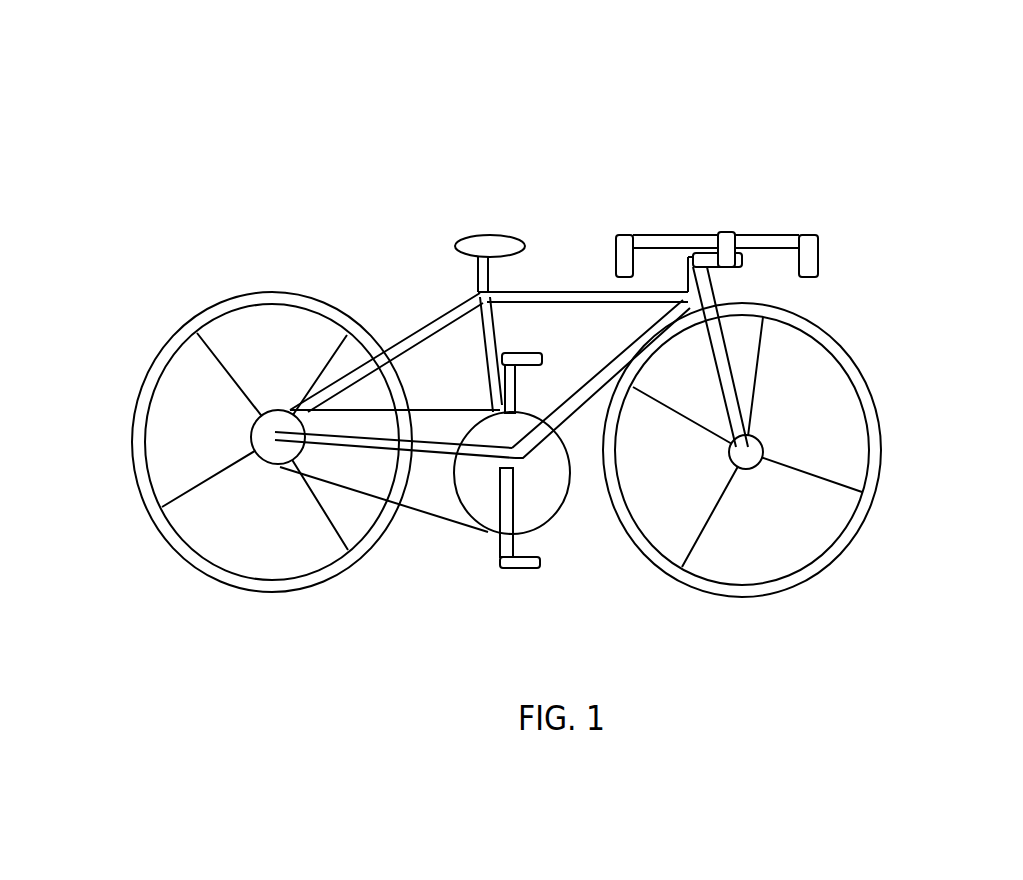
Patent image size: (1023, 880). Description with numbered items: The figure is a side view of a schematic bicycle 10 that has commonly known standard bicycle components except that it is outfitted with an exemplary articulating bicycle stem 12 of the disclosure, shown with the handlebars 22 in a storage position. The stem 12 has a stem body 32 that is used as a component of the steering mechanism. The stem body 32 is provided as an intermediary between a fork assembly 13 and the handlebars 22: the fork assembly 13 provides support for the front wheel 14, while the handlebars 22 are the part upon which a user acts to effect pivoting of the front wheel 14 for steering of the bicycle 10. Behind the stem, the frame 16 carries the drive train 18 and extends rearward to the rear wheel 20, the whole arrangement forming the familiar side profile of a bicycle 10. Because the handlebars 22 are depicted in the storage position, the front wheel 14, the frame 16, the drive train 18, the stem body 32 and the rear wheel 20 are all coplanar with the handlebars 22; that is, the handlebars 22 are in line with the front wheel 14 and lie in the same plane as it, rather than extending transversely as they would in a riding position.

The bicycle 10 is at (853, 120).
The articulating bicycle stem 12 is at (722, 283).
The fork assembly 13 is at (730, 388).
The front wheel 14 is at (862, 408).
The frame 16 is at (440, 318).
The drive train 18 is at (545, 512).
The rear wheel 20 is at (205, 563).
The handlebars 22 is at (792, 240).
The stem body 32 is at (718, 250).